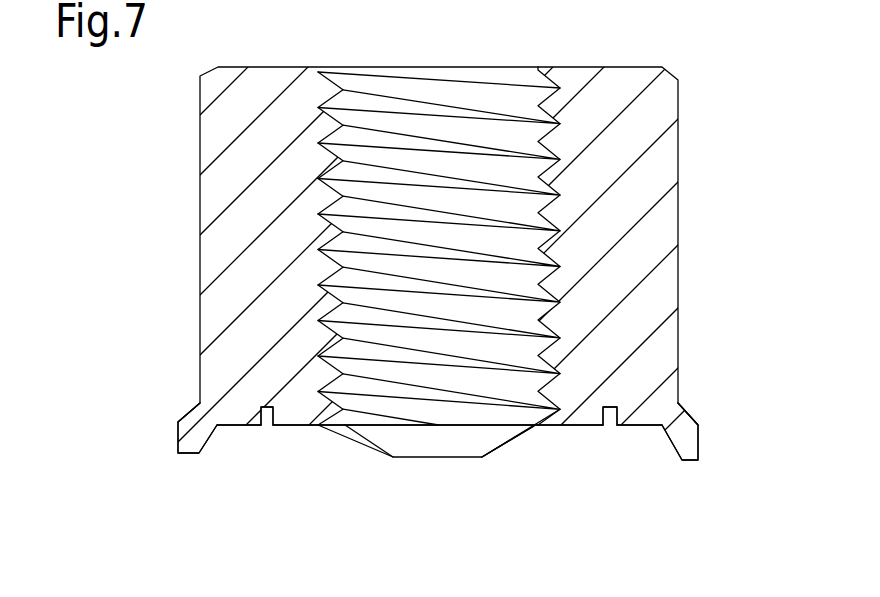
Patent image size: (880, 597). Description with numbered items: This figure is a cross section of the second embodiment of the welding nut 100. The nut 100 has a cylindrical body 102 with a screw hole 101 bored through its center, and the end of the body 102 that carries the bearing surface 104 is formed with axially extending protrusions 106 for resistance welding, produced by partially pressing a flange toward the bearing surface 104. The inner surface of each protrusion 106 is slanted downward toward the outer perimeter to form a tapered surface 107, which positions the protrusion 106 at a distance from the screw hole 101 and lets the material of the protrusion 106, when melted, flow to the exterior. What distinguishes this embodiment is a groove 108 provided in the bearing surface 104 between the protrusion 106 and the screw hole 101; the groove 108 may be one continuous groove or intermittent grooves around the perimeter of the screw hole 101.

The welding nut 100 is at (688, 75).
The screw hole 101 is at (500, 92).
The cylindrical body 102 is at (200, 207).
The bearing surface 104 is at (284, 427).
The protrusion 106 is at (178, 443).
The tapered surface 107 is at (207, 443).
The groove 108 is at (266, 428).